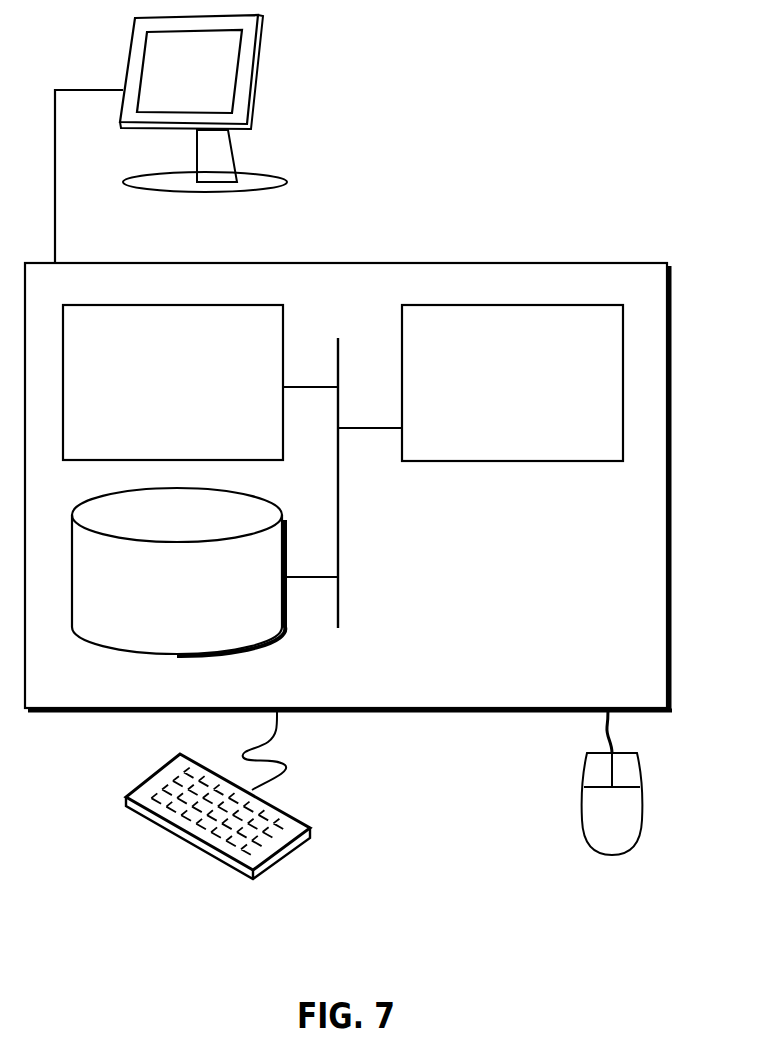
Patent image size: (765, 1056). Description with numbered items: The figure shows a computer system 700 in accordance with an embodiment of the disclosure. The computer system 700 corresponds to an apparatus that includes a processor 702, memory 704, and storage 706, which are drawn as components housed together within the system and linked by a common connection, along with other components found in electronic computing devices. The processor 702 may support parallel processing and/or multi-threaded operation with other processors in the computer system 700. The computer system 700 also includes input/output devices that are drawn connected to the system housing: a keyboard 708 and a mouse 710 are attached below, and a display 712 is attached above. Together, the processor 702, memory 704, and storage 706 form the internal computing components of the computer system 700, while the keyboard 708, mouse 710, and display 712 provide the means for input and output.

The computer system 700 is at (392, 243).
The processor 702 is at (537, 397).
The memory 704 is at (195, 395).
The storage 706 is at (202, 602).
The keyboard 708 is at (145, 817).
The mouse 710 is at (634, 828).
The display 712 is at (171, 139).